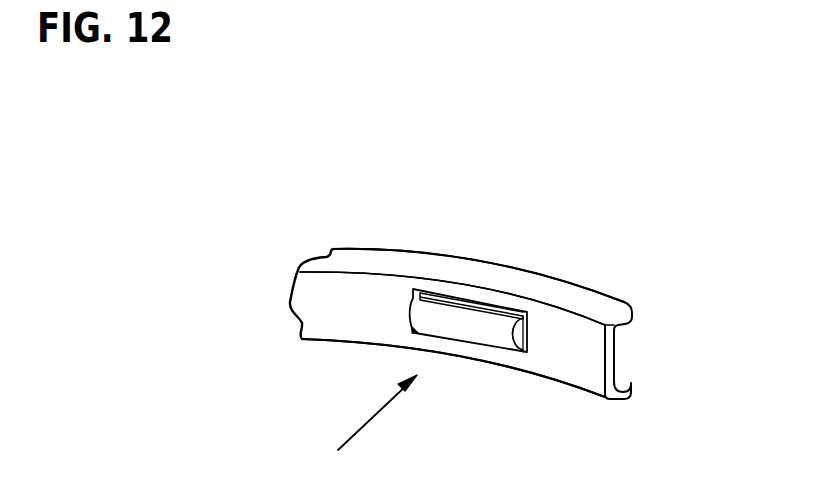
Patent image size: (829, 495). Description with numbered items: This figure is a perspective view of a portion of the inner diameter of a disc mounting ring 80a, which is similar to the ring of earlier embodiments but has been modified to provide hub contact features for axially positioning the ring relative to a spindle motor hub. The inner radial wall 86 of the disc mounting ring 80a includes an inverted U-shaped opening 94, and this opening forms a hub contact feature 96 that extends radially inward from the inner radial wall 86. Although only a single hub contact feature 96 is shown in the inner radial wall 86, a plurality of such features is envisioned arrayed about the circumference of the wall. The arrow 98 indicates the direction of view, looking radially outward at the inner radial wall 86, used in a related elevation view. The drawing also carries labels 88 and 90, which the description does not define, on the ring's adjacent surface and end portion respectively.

The disc mounting ring 80a is at (270, 240).
The inner radial wall 86 is at (345, 308).
The top rim surface 88 is at (388, 258).
The C-shaped channel end 90 is at (622, 377).
The inverted U-shaped opening 94 is at (453, 295).
The hub contact feature 96 is at (495, 330).
The arrow 98 is at (373, 415).